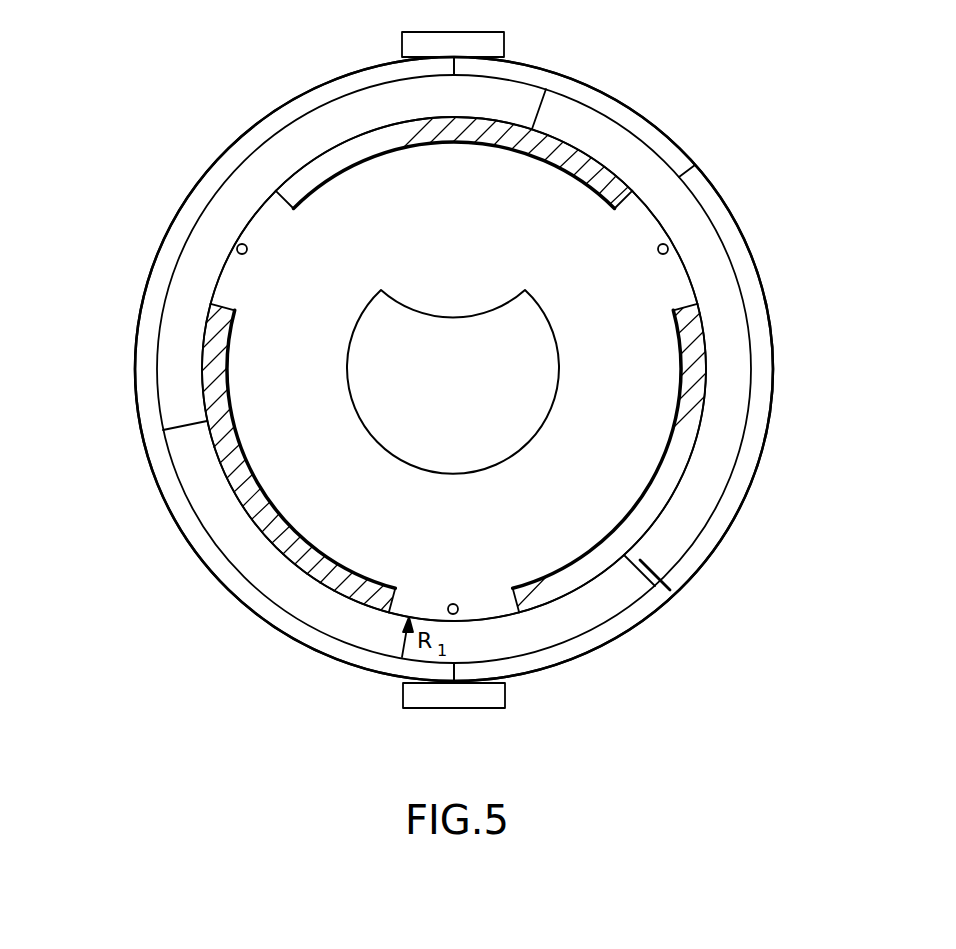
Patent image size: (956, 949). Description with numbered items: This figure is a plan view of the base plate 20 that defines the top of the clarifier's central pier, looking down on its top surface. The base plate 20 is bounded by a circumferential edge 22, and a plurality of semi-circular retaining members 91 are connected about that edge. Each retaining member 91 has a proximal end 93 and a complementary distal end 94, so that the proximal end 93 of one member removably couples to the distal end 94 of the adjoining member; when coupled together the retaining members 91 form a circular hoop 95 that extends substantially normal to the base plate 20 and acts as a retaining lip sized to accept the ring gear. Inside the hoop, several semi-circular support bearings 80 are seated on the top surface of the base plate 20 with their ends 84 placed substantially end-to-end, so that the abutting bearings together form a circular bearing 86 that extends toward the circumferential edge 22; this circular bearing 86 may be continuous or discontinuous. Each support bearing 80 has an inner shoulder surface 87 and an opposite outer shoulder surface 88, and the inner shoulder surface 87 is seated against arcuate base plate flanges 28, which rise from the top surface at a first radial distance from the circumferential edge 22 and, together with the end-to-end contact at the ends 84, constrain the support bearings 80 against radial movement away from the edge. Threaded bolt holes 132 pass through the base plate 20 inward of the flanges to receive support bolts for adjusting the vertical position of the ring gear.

The base plate 20 is at (491, 382).
The circumferential edge 22 is at (742, 447).
The base plate flange 28 is at (418, 136).
The support bearing 80 is at (193, 272).
The ends 84 is at (535, 108).
The circular bearing 86 is at (670, 590).
The inner shoulder surface 87 is at (685, 280).
The outer shoulder surface 88 is at (682, 168).
The retaining member 91 is at (207, 182).
The proximal end 93 is at (454, 66).
The distal end 94 is at (455, 58).
The circular hoop 95 is at (260, 130).
The threaded bolt holes 132 is at (250, 254).